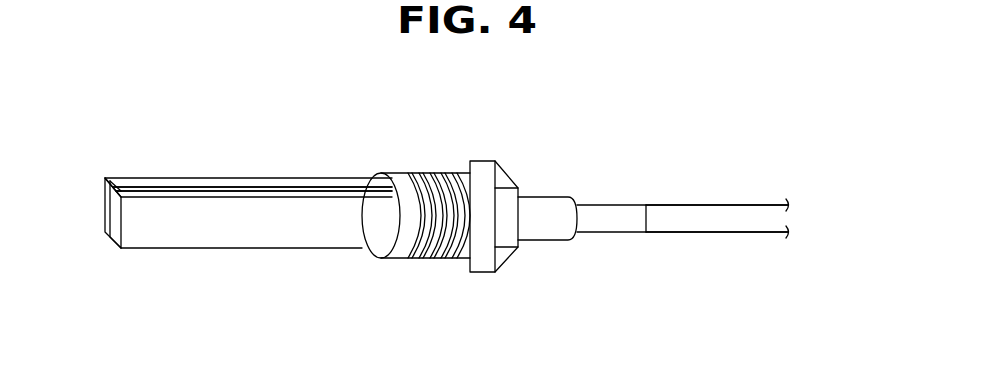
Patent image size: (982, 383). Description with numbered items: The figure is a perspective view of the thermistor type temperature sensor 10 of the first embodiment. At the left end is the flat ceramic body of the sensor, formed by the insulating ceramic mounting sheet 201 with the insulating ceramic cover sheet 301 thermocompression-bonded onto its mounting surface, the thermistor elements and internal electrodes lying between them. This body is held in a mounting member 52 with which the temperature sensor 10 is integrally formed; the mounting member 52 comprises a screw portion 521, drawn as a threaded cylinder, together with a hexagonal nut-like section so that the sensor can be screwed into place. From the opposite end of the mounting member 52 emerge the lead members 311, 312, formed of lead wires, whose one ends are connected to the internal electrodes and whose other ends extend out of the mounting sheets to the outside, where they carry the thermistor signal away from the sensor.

The temperature sensor 10 is at (375, 148).
The mounting sheet 201 is at (197, 237).
The cover sheet 301 is at (172, 178).
The mounting member 52 is at (465, 249).
The screw portion 521 is at (423, 262).
The lead member 311 is at (618, 233).
The lead member 312 is at (717, 218).